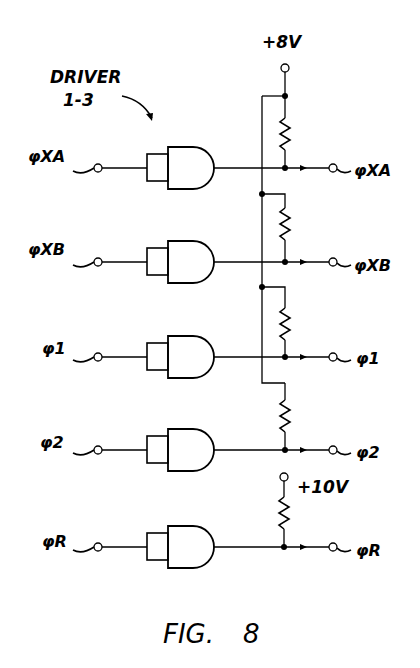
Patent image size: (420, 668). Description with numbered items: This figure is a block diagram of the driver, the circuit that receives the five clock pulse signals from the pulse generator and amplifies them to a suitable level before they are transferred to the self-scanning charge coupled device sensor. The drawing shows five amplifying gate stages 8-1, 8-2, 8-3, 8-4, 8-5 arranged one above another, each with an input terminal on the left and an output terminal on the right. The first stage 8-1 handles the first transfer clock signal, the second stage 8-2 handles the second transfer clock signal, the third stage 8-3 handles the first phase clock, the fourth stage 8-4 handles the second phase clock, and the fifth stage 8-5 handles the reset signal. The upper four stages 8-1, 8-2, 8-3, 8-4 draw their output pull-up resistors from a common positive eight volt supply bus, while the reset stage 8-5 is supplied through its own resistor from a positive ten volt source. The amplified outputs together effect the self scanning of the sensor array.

The AND gate (driver) for φXA 8-1 is at (190, 184).
The AND gate (driver) for φXB 8-2 is at (190, 278).
The AND gate (driver) for φ1 8-3 is at (190, 373).
The AND gate (driver) for φ2 8-4 is at (190, 466).
The AND gate (driver) for φR 8-5 is at (190, 563).